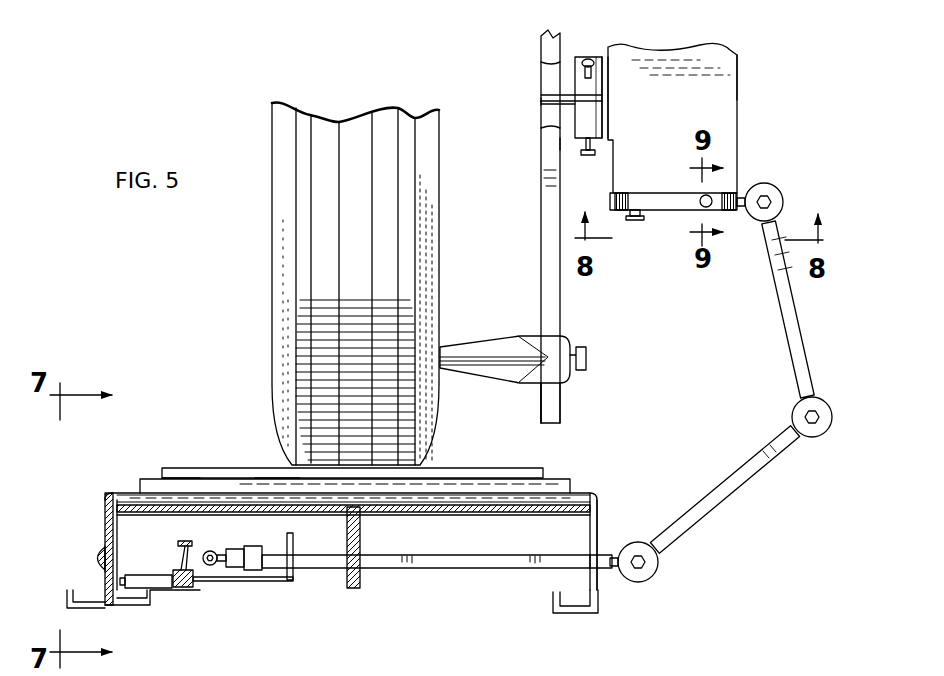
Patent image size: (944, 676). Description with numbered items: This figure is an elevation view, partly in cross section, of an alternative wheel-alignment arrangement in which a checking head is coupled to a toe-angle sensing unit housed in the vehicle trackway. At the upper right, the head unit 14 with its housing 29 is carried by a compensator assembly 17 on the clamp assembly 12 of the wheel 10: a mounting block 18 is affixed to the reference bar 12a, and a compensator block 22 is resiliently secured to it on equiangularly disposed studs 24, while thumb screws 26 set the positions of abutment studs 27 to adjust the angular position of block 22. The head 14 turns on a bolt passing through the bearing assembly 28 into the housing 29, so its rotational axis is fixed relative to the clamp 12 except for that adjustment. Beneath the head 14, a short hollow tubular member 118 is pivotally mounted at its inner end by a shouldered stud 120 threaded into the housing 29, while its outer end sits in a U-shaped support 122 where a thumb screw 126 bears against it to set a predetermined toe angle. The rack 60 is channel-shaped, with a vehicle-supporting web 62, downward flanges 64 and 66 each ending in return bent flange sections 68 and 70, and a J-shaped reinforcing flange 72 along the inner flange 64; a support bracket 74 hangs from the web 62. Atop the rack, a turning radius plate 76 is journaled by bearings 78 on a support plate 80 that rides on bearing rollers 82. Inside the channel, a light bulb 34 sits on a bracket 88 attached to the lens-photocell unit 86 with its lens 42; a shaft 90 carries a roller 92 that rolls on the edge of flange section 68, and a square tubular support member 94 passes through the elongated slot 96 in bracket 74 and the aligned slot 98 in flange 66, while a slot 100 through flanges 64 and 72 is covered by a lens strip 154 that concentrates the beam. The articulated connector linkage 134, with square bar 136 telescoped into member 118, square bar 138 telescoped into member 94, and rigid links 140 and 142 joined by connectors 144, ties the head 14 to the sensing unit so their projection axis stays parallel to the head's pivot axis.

The wheel 10 is at (270, 130).
The clamp assembly 12 is at (562, 302).
The reference bar 12a is at (541, 215).
The head unit 14 is at (740, 105).
The compensator assembly 17 is at (566, 150).
The mounting block 18 is at (575, 103).
The compensator block 22 is at (592, 56).
The studs 24 is at (578, 97).
The thumb screws 26 is at (582, 68).
The abutment studs 27 is at (560, 66).
The bearing assembly 28 is at (608, 88).
The housing 29 is at (738, 80).
The light bulb 34 is at (215, 552).
The lens 42 is at (193, 585).
The rack 60 is at (600, 495).
The web 62 is at (130, 492).
The inner flange 64 is at (105, 518).
The outer flange 66 is at (600, 516).
The return bent flange section 68 is at (145, 608).
The return bent flange section 70 is at (575, 613).
The J-shaped reinforcing flange 72 is at (75, 608).
The support bracket 74 is at (357, 590).
The turning radius plates 76 is at (225, 468).
The bearings 78 is at (195, 478).
The support plates 80 is at (150, 480).
The bearing rollers 82 is at (457, 490).
The lens-photocell unit 86 is at (186, 542).
The bracket 88 is at (270, 581).
The shaft 90 is at (172, 590).
The roller 92 is at (150, 575).
The square tubular support member 94 is at (440, 570).
The elongated slot 96 is at (358, 560).
The slot 98 is at (588, 558).
The slot 100 is at (99, 548).
The tubular member 118 is at (622, 193).
The shouldered stud 120 is at (633, 220).
The U-shaped support 122 is at (702, 193).
The thumb screw 126 is at (712, 198).
The articulated connector linkage 134 is at (756, 490).
The square bar 136 is at (742, 210).
The square bar 138 is at (637, 582).
The link 140 is at (782, 324).
The link 142 is at (746, 456).
The connectors 144 is at (783, 200).
The lens strip 154 is at (98, 568).